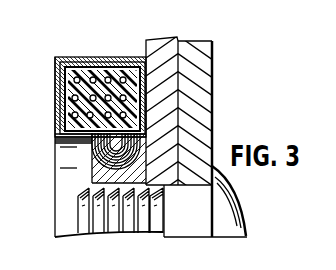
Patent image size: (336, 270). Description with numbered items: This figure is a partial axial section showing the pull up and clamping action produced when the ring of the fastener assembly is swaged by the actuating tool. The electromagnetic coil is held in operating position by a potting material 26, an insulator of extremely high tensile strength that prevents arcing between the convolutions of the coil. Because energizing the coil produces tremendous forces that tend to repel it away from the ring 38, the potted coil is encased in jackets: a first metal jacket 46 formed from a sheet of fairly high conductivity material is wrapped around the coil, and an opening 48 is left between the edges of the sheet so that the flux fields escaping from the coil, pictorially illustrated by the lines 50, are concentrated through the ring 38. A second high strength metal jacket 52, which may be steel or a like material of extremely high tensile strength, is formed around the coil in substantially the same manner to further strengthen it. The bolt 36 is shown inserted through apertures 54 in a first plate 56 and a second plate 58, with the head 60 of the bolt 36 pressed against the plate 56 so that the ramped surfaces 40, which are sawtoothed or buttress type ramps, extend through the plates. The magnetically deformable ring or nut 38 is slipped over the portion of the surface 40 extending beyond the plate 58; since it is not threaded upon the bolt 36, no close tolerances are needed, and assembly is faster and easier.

The potting material 26 is at (106, 66).
The bolt 36 is at (192, 230).
The ring 38 is at (92, 185).
The ramped surfaces 40 is at (124, 218).
The first metal jacket 46 is at (56, 92).
The opening 48 is at (63, 124).
The lines 50 is at (91, 158).
The second metal jacket 52 is at (72, 57).
The apertures 54 is at (198, 188).
The first plate 56 is at (186, 110).
The second plate 58 is at (170, 115).
The head 60 is at (243, 212).